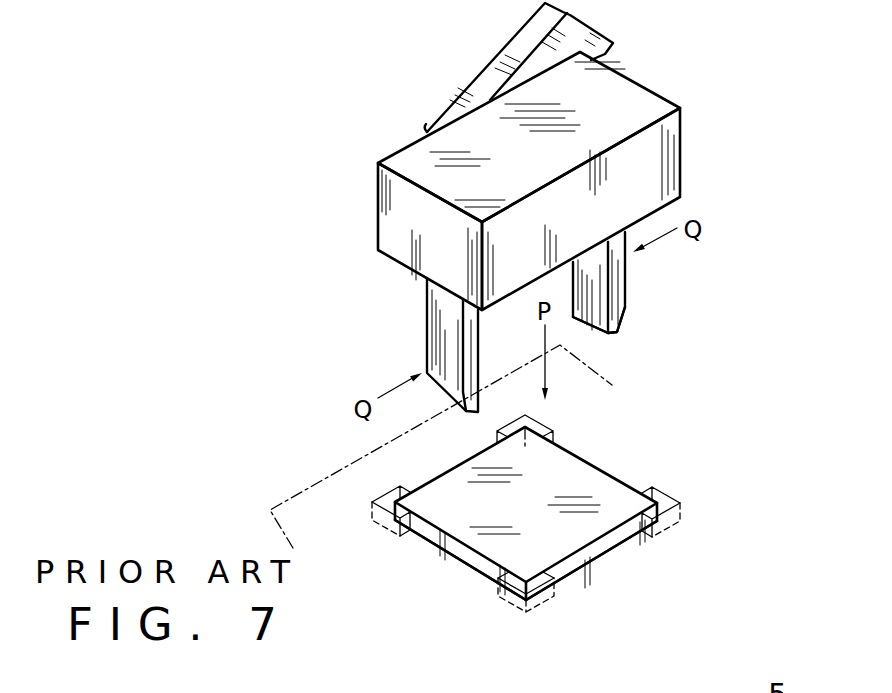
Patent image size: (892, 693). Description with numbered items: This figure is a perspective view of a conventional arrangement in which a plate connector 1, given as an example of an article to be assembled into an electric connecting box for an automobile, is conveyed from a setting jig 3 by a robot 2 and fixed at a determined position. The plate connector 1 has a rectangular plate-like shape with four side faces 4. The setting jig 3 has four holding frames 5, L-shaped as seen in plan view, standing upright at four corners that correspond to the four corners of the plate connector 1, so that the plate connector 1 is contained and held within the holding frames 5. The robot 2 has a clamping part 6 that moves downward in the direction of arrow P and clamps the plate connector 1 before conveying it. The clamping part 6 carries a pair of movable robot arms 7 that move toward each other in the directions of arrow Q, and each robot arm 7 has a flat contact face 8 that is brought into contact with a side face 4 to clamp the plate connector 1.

The plate connector 1 is at (606, 459).
The robot 2 is at (458, 79).
The setting jig 3 is at (328, 517).
The side face 4 is at (441, 540).
The holding frame 5 is at (555, 424).
The clamping part 6 is at (682, 163).
The robot arm 7 is at (446, 328).
The flat contact face 8 is at (594, 300).